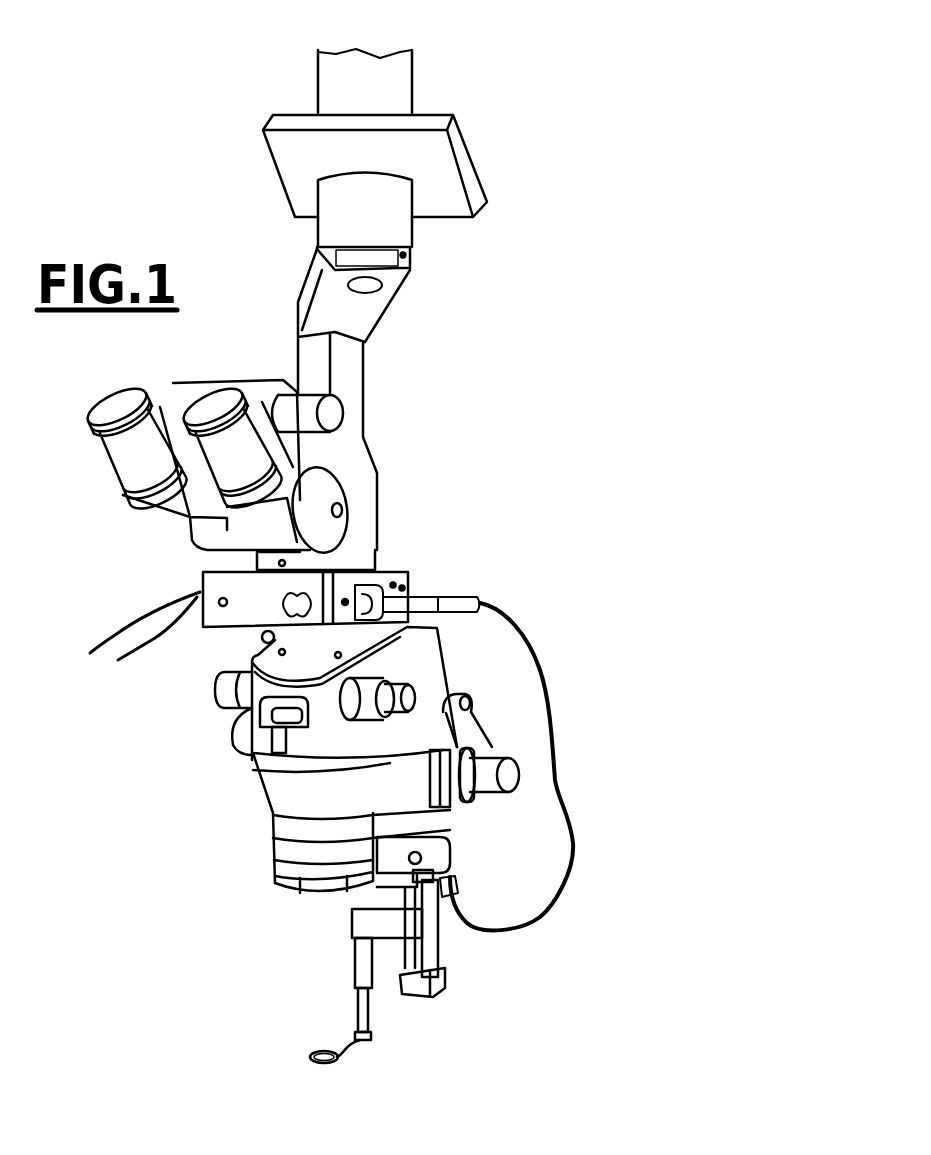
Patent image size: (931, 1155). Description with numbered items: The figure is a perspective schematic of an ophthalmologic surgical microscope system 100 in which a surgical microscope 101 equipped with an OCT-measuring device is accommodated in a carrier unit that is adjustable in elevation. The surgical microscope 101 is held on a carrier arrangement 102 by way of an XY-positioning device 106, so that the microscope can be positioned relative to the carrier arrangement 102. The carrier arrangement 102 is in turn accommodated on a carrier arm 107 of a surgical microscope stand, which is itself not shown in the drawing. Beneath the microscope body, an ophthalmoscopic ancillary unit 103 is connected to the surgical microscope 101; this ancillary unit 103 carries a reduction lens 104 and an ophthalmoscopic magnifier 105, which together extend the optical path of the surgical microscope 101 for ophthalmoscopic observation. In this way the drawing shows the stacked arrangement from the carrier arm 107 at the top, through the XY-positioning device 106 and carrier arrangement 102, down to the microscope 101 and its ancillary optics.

The surgical microscope system 100 is at (446, 501).
The surgical microscope 101 is at (280, 790).
The carrier arrangement 102 is at (338, 372).
The ophthalmoscopic ancillary unit 103 is at (428, 952).
The reduction lens 104 is at (288, 882).
The ophthalmoscopic magnifier 105 is at (310, 1055).
The XY-positioning device 106 is at (285, 162).
The carrier arm 107 is at (390, 87).